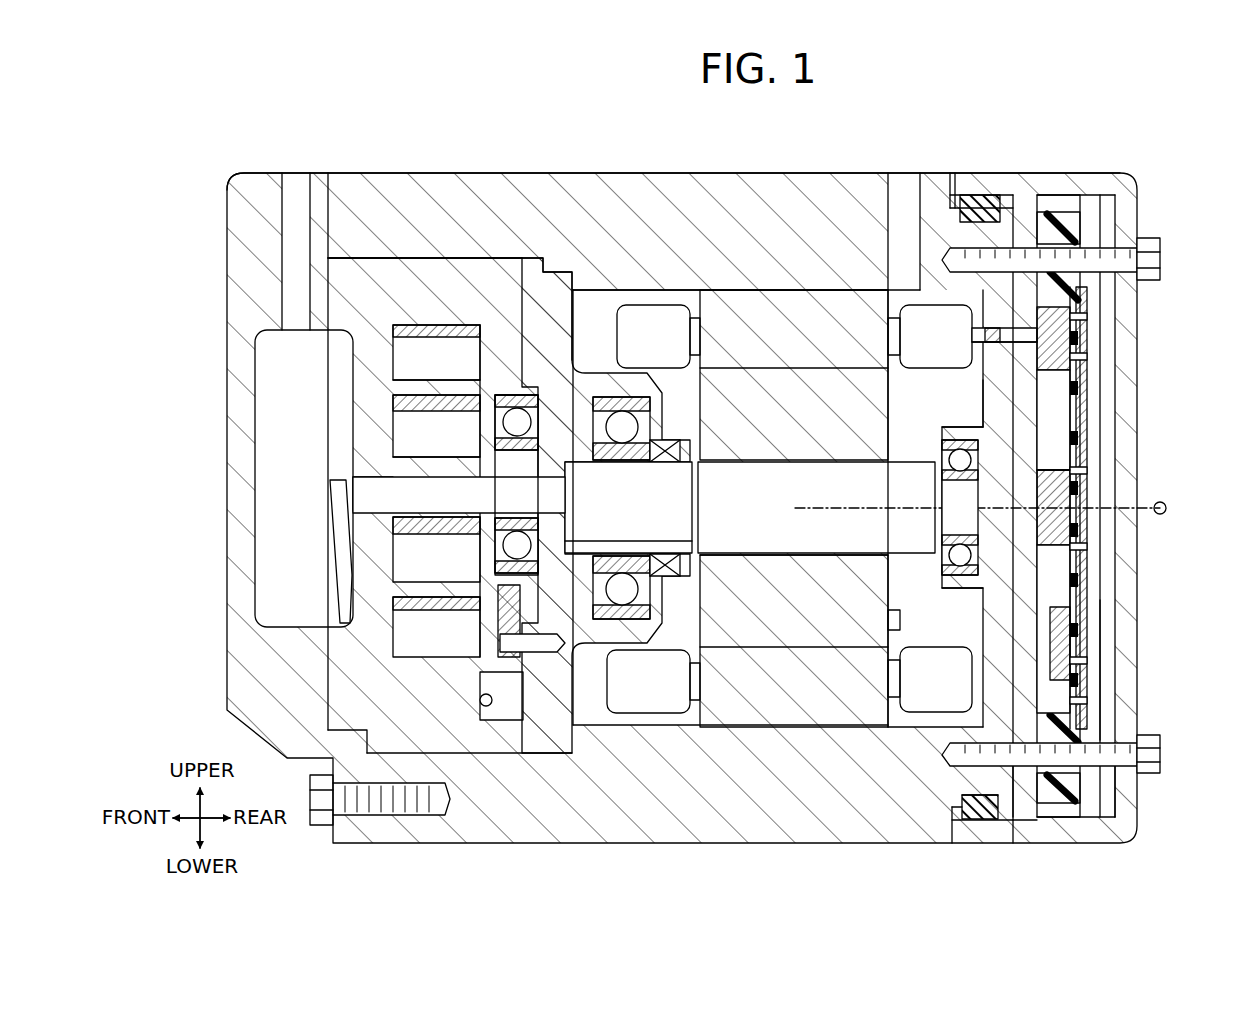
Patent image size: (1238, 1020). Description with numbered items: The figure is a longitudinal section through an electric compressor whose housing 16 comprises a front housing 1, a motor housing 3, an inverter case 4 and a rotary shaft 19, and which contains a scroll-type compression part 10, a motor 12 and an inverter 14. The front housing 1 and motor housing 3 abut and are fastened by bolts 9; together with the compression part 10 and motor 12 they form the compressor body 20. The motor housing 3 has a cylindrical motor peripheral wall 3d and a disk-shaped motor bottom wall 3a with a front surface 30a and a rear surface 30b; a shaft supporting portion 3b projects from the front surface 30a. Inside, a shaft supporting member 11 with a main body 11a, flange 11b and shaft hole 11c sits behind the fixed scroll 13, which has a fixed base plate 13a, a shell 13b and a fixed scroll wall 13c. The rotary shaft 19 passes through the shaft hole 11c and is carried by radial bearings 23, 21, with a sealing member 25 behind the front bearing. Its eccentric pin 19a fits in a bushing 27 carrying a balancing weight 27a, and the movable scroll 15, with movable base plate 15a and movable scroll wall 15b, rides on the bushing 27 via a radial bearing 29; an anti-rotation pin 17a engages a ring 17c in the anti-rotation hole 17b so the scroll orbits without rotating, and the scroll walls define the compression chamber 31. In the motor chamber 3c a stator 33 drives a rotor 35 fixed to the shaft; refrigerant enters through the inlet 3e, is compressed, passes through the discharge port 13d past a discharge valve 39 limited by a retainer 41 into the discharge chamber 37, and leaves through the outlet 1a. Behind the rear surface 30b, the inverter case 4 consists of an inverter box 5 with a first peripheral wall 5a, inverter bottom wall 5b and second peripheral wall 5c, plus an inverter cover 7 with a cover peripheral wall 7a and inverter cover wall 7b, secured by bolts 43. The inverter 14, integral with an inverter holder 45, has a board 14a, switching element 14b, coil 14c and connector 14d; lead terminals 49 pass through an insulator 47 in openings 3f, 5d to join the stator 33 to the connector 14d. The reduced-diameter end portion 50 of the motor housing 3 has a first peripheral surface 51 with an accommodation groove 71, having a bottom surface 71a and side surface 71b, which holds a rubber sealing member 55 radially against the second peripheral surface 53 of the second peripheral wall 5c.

The front housing 1 is at (232, 472).
The outlet 1a is at (292, 198).
The motor housing 3 is at (714, 832).
The motor bottom wall 3a is at (996, 622).
The shaft supporting portion 3b is at (950, 432).
The motor chamber 3c is at (902, 588).
The motor peripheral wall 3d is at (740, 190).
The inlet 3e is at (903, 200).
The opening 3f is at (985, 334).
The inverter case 4 is at (1128, 130).
The inverter box 5 is at (1056, 200).
The first peripheral wall 5a is at (1074, 818).
The inverter bottom wall 5b is at (1034, 568).
The second peripheral wall 5c is at (992, 825).
The opening 5d is at (1050, 374).
The inverter cover 7 is at (1112, 200).
The cover peripheral wall 7a is at (1110, 818).
The inverter cover wall 7b is at (1110, 690).
The bolt 9 is at (316, 800).
The compression part 10 is at (446, 250).
The shaft supporting member 11 is at (552, 690).
The main body 11a is at (640, 382).
The flange 11b is at (566, 312).
The shaft hole 11c is at (668, 462).
The motor 12 is at (818, 282).
The fixed scroll 13 is at (372, 300).
The fixed base plate 13a is at (368, 402).
The shell 13b is at (415, 275).
The fixed scroll wall 13c is at (420, 378).
The discharge port 13d is at (362, 440).
The inverter 14 is at (1088, 588).
The board 14a is at (1082, 455).
The switching element 14b is at (1078, 645).
The coil 14c is at (1082, 540).
The connector 14d is at (1075, 340).
The movable scroll 15 is at (510, 300).
The movable base plate 15a is at (500, 548).
The movable scroll wall 15b is at (414, 532).
The housing 16 is at (218, 205).
The anti-rotation pin 17a is at (525, 655).
The anti-rotation hole 17b is at (500, 640).
The ring 17c is at (510, 657).
The rotary shaft 19 is at (728, 513).
The eccentric pin 19a is at (500, 490).
The compressor body 20 is at (246, 310).
The radial bearing 21 is at (942, 545).
The radial bearing 23 is at (613, 466).
The sealing member 25 is at (666, 548).
The bushing 27 is at (600, 452).
The balancing weight 27a is at (622, 648).
The radial bearing 29 is at (492, 400).
The front surface 30a is at (980, 402).
The rear surface 30b is at (1062, 432).
The compression chamber 31 is at (425, 445).
The stator 33 is at (808, 700).
The rotor 35 is at (880, 620).
The discharge chamber 37 is at (280, 587).
The discharge valve 39 is at (356, 488).
The retainer 41 is at (336, 502).
The bolt 43 is at (1160, 752).
The inverter holder 45 is at (1082, 365).
The insulator 47 is at (992, 346).
The lead terminal 49 is at (985, 340).
The end portion 50 is at (1012, 812).
The first peripheral surface 51 is at (950, 185).
The second peripheral surface 53 is at (1016, 215).
The sealing member 55 is at (975, 194).
The accommodation groove 71 is at (960, 806).
The bottom surface 71a is at (968, 795).
The side surface 71b is at (958, 838).